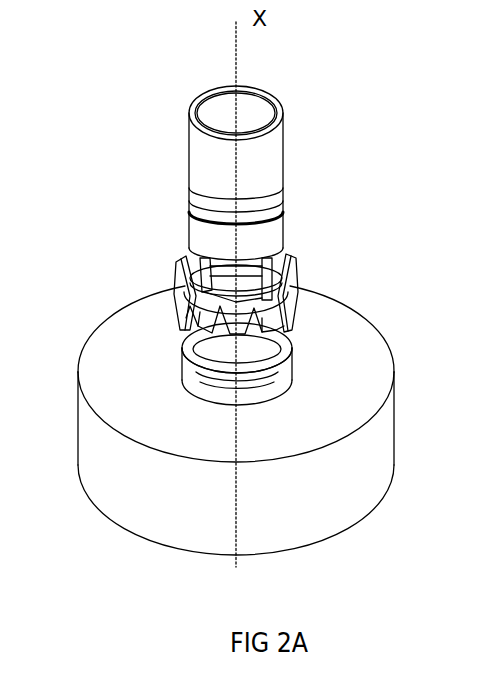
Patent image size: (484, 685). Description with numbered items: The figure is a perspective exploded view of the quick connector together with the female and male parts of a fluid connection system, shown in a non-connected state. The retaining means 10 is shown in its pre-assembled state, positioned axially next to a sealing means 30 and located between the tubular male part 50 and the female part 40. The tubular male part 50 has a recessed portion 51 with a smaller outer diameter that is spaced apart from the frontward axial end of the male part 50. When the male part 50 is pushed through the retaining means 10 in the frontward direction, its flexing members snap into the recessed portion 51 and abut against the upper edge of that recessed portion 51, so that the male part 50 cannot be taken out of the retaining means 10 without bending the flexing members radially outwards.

The retaining means 10 is at (283, 265).
The sealing means 30 is at (288, 338).
The female part 40 is at (358, 337).
The tubular male part 50 is at (271, 152).
The recessed portion 51 is at (283, 207).